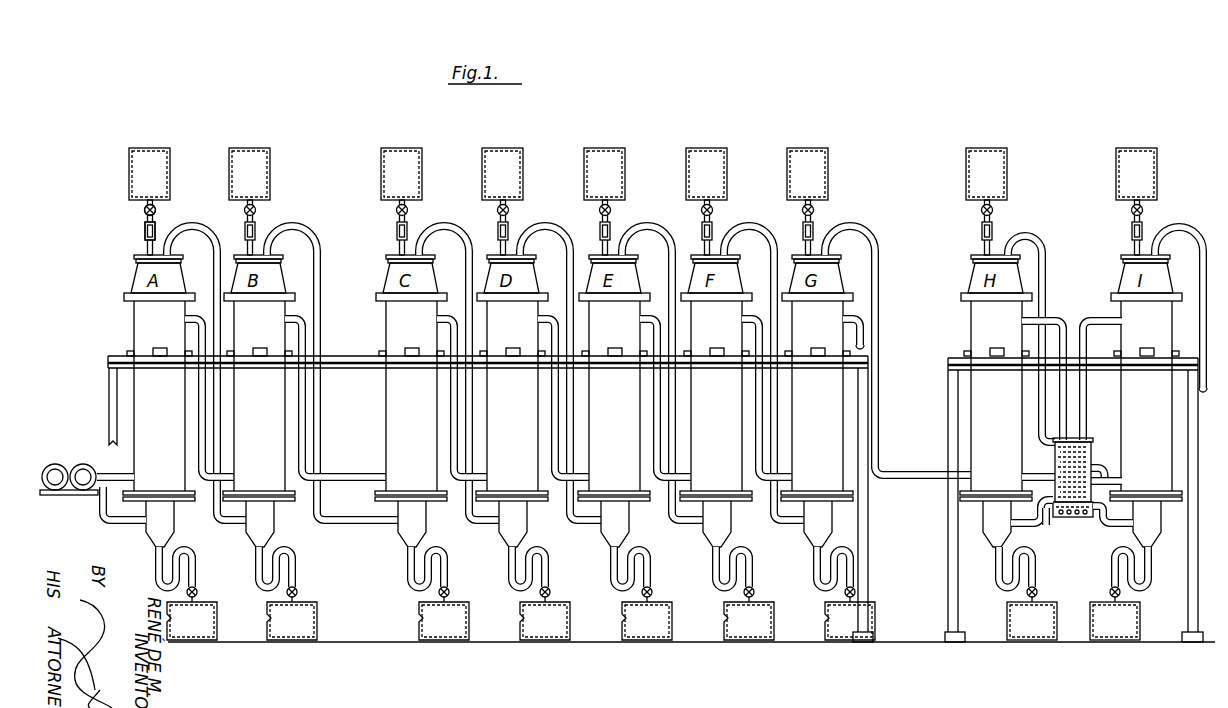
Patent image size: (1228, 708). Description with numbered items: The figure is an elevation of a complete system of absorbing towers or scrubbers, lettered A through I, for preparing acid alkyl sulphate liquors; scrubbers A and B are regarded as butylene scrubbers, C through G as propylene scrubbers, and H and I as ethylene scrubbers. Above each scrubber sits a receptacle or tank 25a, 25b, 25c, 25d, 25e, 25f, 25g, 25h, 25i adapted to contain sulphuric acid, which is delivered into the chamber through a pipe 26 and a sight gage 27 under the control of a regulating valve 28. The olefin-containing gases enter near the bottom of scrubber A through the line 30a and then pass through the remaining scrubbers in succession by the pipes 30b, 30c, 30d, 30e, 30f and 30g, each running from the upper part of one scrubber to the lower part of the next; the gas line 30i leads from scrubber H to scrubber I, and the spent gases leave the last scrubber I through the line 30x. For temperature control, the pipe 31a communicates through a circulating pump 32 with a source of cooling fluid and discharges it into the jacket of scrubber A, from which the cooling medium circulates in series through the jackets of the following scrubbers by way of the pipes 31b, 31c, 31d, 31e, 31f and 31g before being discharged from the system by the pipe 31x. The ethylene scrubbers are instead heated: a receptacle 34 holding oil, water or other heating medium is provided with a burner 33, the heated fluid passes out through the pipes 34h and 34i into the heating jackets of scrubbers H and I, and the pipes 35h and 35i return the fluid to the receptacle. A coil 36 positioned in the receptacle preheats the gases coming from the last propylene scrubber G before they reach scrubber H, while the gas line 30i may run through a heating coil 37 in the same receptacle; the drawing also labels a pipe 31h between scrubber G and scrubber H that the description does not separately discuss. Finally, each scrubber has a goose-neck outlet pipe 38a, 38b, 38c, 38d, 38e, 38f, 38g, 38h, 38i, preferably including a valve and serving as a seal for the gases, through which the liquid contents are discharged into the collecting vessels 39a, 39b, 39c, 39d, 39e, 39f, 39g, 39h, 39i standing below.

The sulphuric acid tank 25a is at (165, 157).
The sulphuric acid tank 25b is at (270, 157).
The sulphuric acid tank 25c is at (422, 157).
The sulphuric acid tank 25d is at (524, 157).
The sulphuric acid tank 25e is at (625, 157).
The sulphuric acid tank 25f is at (727, 157).
The sulphuric acid tank 25g is at (828, 157).
The sulphuric acid tank 25h is at (1007, 157).
The sulphuric acid tank 25i is at (1154, 157).
The acid delivery pipe 26 is at (170, 204).
The sight gage 27 is at (126, 229).
The regulating valve 28 is at (125, 207).
The gas inlet line 30a is at (102, 511).
The gas line 30b is at (206, 380).
The gas line 30c is at (332, 380).
The gas line 30d is at (459, 380).
The gas line 30e is at (560, 380).
The gas line 30f is at (662, 380).
The gas line 30g is at (764, 380).
The gas line 30i is at (1043, 411).
The spent gas outlet line 30x is at (1204, 346).
The cooling fluid supply pipe 31a is at (105, 452).
The cooling fluid pipe 31b is at (229, 398).
The cooling fluid pipe 31c is at (335, 399).
The cooling fluid pipe 31d is at (481, 398).
The cooling fluid pipe 31e is at (582, 398).
The cooling fluid pipe 31f is at (683, 398).
The cooling fluid pipe 31g is at (786, 398).
The connecting pipe 31h is at (918, 351).
The cooling fluid discharge pipe 31x is at (884, 323).
The circulating pump 32 is at (68, 461).
The burner 33 is at (1073, 518).
The heating medium receptacle 34 is at (1090, 460).
The heating fluid supply pipe 34h is at (1050, 320).
The heating fluid supply pipe 34i is at (1090, 317).
The heating fluid return pipe 35h is at (1040, 473).
The heating fluid return pipe 35i is at (1112, 481).
The preheating coil 36 is at (1106, 469).
The heating coil 37 is at (1089, 451).
The outlet pipe 38a is at (196, 574).
The outlet pipe 38b is at (296, 574).
The outlet pipe 38c is at (448, 574).
The outlet pipe 38d is at (550, 574).
The outlet pipe 38e is at (651, 574).
The outlet pipe 38f is at (753, 574).
The outlet pipe 38g is at (862, 574).
The outlet pipe 38h is at (1039, 574).
The outlet pipe 38i is at (1145, 574).
The collecting vessel 39a is at (212, 621).
The collecting vessel 39b is at (312, 621).
The collecting vessel 39c is at (463, 621).
The collecting vessel 39d is at (565, 621).
The collecting vessel 39e is at (667, 621).
The collecting vessel 39f is at (768, 621).
The collecting vessel 39g is at (872, 621).
The collecting vessel 39h is at (1048, 621).
The collecting vessel 39i is at (1133, 621).